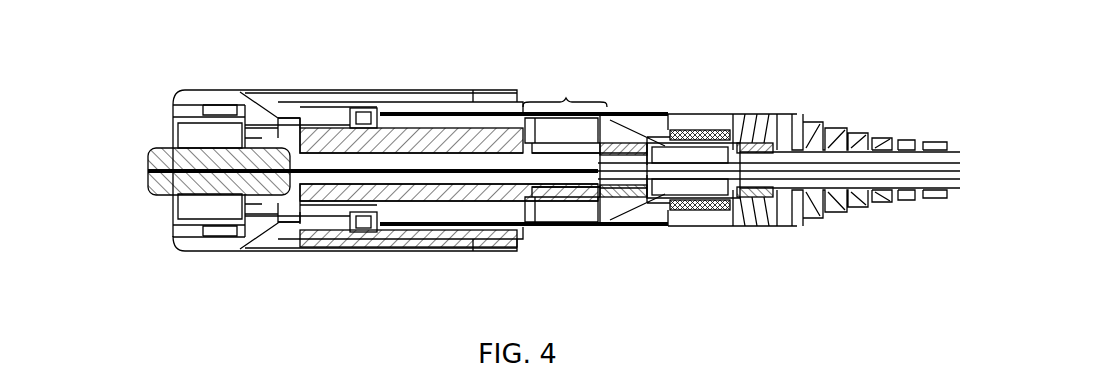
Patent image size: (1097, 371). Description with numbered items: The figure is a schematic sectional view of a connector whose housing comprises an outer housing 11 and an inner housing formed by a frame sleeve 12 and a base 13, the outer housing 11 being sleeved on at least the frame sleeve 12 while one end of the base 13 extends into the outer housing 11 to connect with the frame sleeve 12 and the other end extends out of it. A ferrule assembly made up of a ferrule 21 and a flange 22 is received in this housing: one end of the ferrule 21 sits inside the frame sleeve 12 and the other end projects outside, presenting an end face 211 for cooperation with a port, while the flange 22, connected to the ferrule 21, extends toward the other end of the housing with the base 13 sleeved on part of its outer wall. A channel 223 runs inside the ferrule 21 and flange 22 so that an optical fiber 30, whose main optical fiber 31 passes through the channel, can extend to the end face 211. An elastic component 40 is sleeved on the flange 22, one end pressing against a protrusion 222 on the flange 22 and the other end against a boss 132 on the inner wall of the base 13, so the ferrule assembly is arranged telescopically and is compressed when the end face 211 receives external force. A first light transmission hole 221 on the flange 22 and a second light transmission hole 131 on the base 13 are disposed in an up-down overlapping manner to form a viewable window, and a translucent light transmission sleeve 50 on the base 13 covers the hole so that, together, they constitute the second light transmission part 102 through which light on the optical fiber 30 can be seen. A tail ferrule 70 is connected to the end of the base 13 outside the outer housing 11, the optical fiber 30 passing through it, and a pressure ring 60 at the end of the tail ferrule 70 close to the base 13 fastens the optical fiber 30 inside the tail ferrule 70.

The outer housing 11 is at (202, 89).
The frame sleeve 12 is at (176, 112).
The base 13 is at (428, 130).
The ferrule 21 is at (167, 148).
The end face 211 is at (147, 180).
The flange 22 is at (387, 150).
The first light transmission hole 221 is at (547, 152).
The protrusion 222 is at (293, 127).
The channel 223 is at (497, 182).
The optical fiber 30 is at (673, 175).
The main optical fiber 31 is at (582, 173).
The elastic component 40 is at (298, 120).
The light transmission sleeve 50 is at (667, 130).
The pressure ring 60 is at (710, 137).
The tail ferrule 70 is at (750, 122).
The second light transmission part 102 is at (565, 91).
The second light transmission hole 131 is at (587, 132).
The boss 132 is at (338, 128).